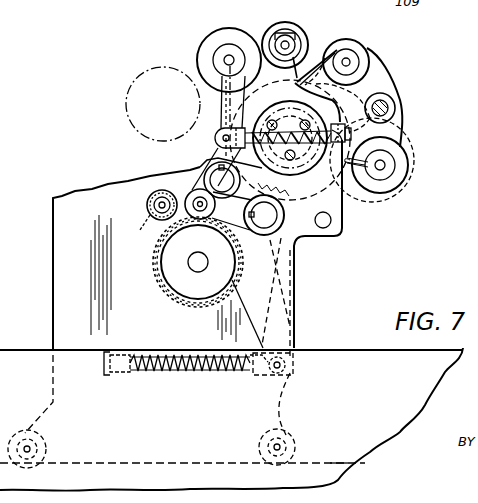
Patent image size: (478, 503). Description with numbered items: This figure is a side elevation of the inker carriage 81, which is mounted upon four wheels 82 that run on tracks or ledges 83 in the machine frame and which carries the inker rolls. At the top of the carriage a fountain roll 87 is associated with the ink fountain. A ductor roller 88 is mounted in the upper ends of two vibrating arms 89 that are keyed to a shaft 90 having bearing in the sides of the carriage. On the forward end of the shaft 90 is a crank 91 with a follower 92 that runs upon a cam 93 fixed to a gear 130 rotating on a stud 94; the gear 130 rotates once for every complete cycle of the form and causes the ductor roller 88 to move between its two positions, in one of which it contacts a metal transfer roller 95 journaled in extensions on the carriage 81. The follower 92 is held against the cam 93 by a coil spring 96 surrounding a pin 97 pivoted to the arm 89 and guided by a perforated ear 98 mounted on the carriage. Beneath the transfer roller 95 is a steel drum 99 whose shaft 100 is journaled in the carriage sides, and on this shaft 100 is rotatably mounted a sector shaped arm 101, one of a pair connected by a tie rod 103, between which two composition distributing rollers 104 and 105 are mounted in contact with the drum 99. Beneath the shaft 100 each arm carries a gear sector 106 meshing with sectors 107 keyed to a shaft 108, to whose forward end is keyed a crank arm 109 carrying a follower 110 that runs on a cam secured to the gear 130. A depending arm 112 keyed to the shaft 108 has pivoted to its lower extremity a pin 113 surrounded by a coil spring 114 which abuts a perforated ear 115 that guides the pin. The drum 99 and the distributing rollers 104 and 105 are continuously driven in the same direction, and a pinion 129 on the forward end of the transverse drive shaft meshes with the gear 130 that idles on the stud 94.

The carriage 81 is at (55, 226).
The wheels 82 is at (27, 437).
The tracks or ledges 83 is at (328, 462).
The fountain roll 87 is at (151, 70).
The ductor roller 88 is at (220, 33).
The vibrating arms 89 is at (214, 128).
The shaft 90 is at (209, 149).
The crank 91 is at (188, 190).
The follower 92 is at (148, 200).
The cam 93 is at (151, 250).
The stud 94 is at (208, 260).
The transfer roller 95 is at (293, 24).
The coil spring 96 is at (318, 215).
The pin 97 is at (353, 134).
The perforated ear 98 is at (372, 90).
The steel drum 99 is at (304, 76).
The shaft 100 is at (288, 138).
The sector shaped arm 101 is at (372, 70).
The tie rod 103 is at (388, 104).
The composition distributing roller 104 is at (366, 50).
The composition distributing roller 105 is at (402, 148).
The gear sector 106 is at (296, 184).
The sectors 107 is at (286, 206).
The shaft 108 is at (313, 221).
The crank arm 109 is at (246, 228).
The follower 110 is at (204, 156).
The depending arm 112 is at (292, 316).
The pin 113 is at (200, 374).
The coil spring 114 is at (170, 374).
The perforated ear 115 is at (118, 375).
The pinion 129 is at (133, 229).
The gear 130 is at (153, 262).